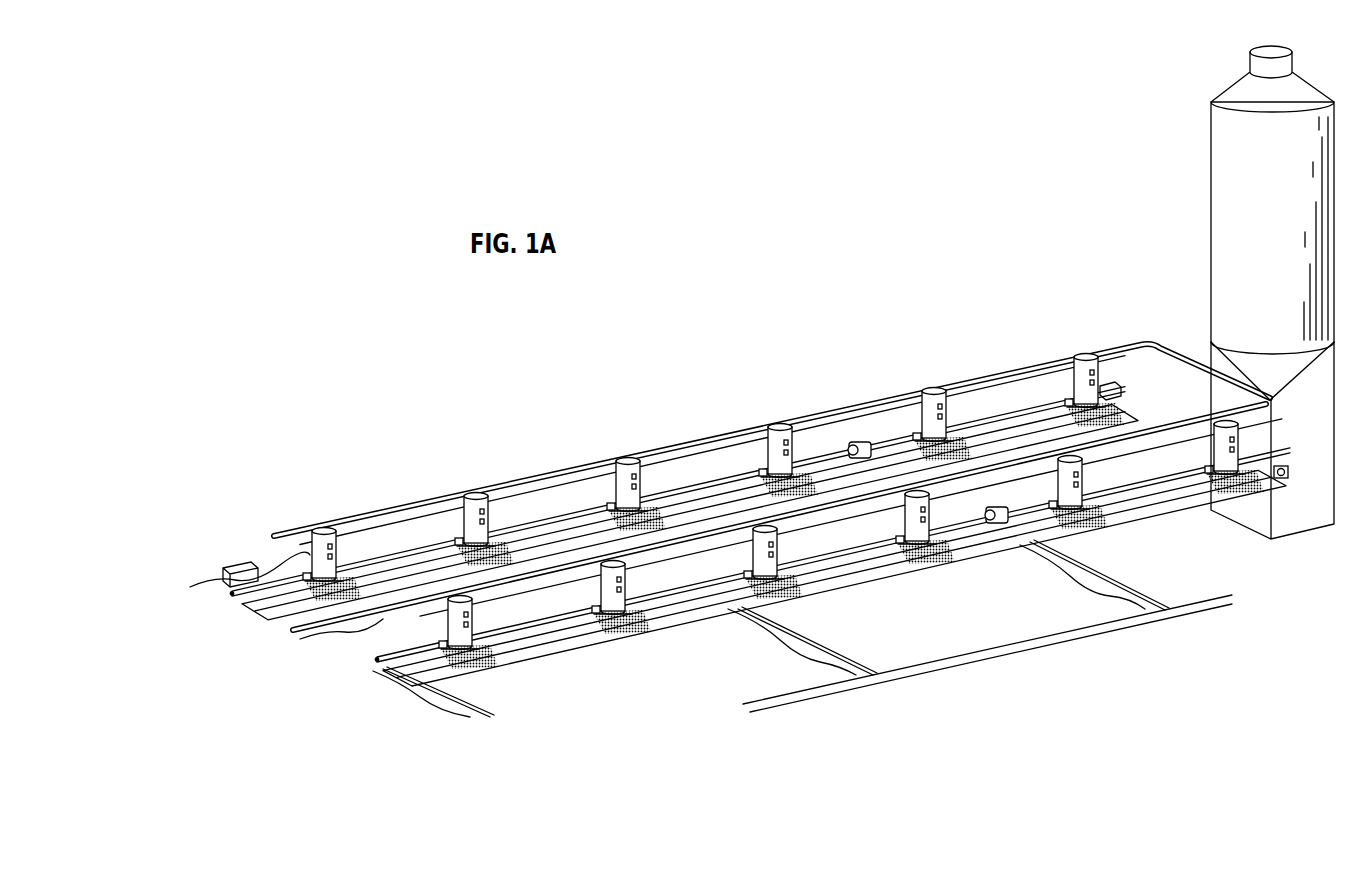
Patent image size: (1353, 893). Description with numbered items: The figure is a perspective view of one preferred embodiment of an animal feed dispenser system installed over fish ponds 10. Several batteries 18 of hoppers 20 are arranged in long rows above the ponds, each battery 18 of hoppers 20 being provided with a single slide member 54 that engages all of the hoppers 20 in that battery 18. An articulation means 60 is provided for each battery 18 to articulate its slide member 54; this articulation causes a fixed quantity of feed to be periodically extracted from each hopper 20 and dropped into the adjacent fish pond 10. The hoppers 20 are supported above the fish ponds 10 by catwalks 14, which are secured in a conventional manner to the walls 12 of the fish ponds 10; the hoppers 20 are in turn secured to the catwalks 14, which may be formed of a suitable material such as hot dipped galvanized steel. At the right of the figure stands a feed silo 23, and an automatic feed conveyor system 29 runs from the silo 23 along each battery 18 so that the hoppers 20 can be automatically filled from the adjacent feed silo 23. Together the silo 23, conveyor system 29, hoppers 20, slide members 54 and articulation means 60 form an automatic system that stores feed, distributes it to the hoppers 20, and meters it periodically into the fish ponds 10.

The fish pond 10 is at (1159, 559).
The wall 12 is at (1152, 600).
The catwalk 14 is at (402, 588).
The battery 18 is at (300, 546).
The hopper 20 is at (337, 539).
The feed silo 23 is at (1222, 205).
The automatic feed conveyor system 29 is at (292, 530).
The slide member 54 is at (233, 592).
The articulation means 60 is at (862, 440).